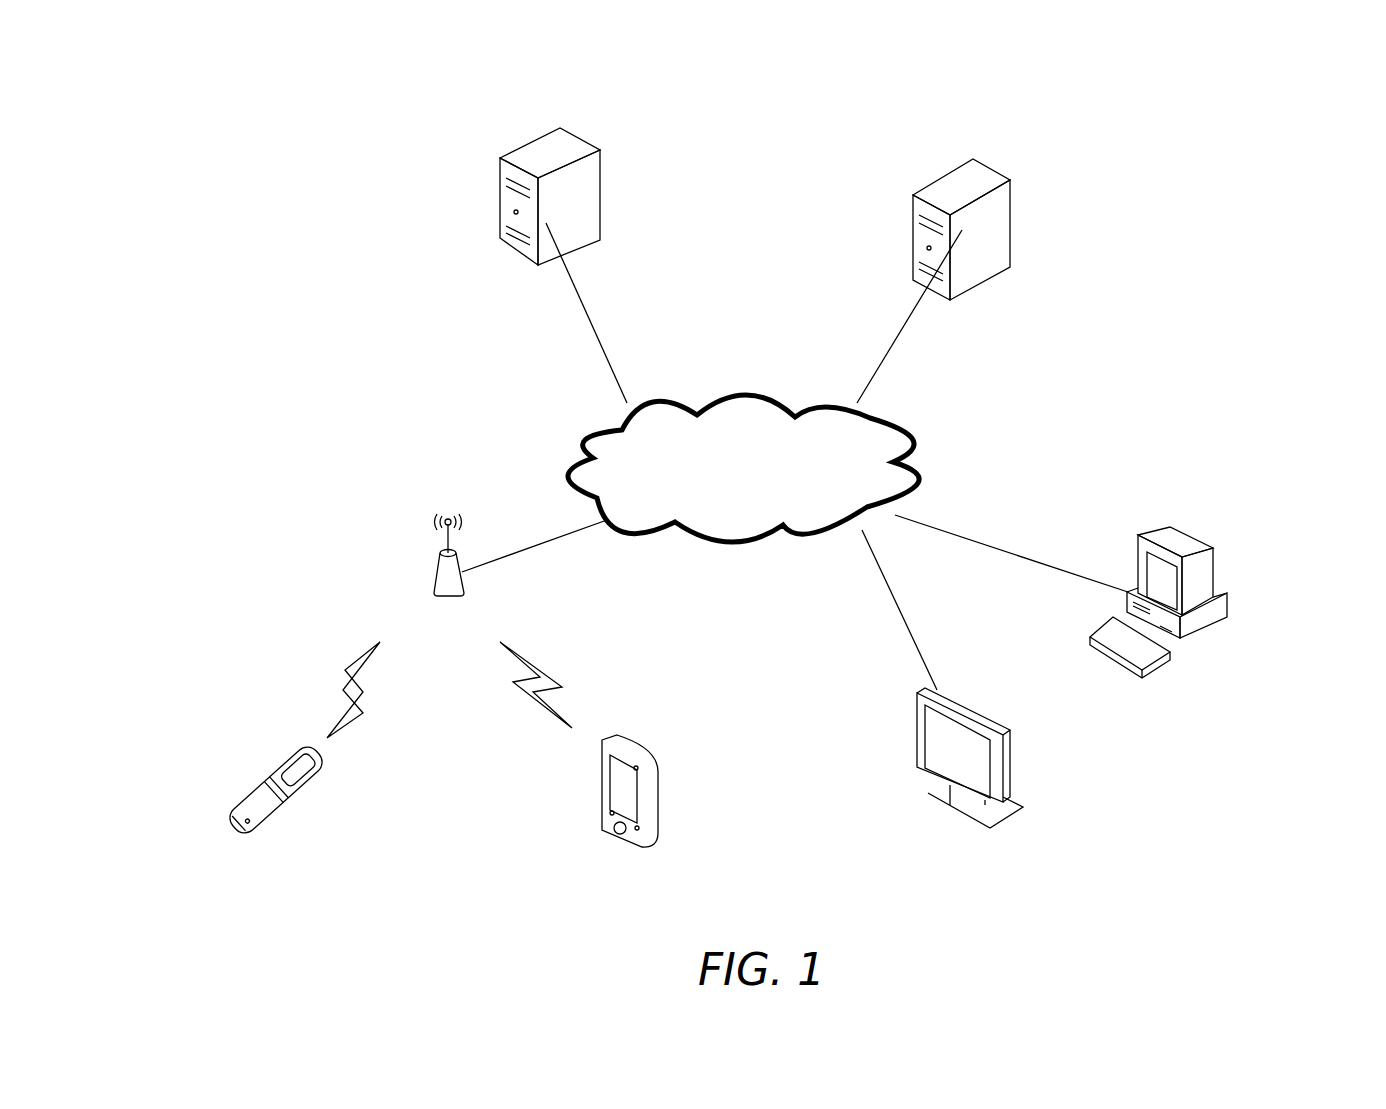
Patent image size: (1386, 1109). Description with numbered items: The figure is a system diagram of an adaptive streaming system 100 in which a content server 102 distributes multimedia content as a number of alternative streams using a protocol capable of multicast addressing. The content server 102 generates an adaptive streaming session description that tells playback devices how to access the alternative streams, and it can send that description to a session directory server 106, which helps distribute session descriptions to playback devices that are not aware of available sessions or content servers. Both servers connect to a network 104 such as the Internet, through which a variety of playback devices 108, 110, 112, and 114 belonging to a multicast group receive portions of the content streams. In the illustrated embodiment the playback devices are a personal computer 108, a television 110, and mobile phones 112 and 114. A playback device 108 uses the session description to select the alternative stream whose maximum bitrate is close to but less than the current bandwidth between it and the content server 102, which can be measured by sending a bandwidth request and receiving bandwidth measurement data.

The adaptive streaming system 100 is at (1212, 812).
The content server 102 is at (549, 193).
The network 104 is at (570, 467).
The session directory server 106 is at (997, 207).
The personal computer 108 is at (1197, 557).
The television 110 is at (440, 552).
The mobile phone 112 is at (628, 790).
The mobile phone 114 is at (265, 788).